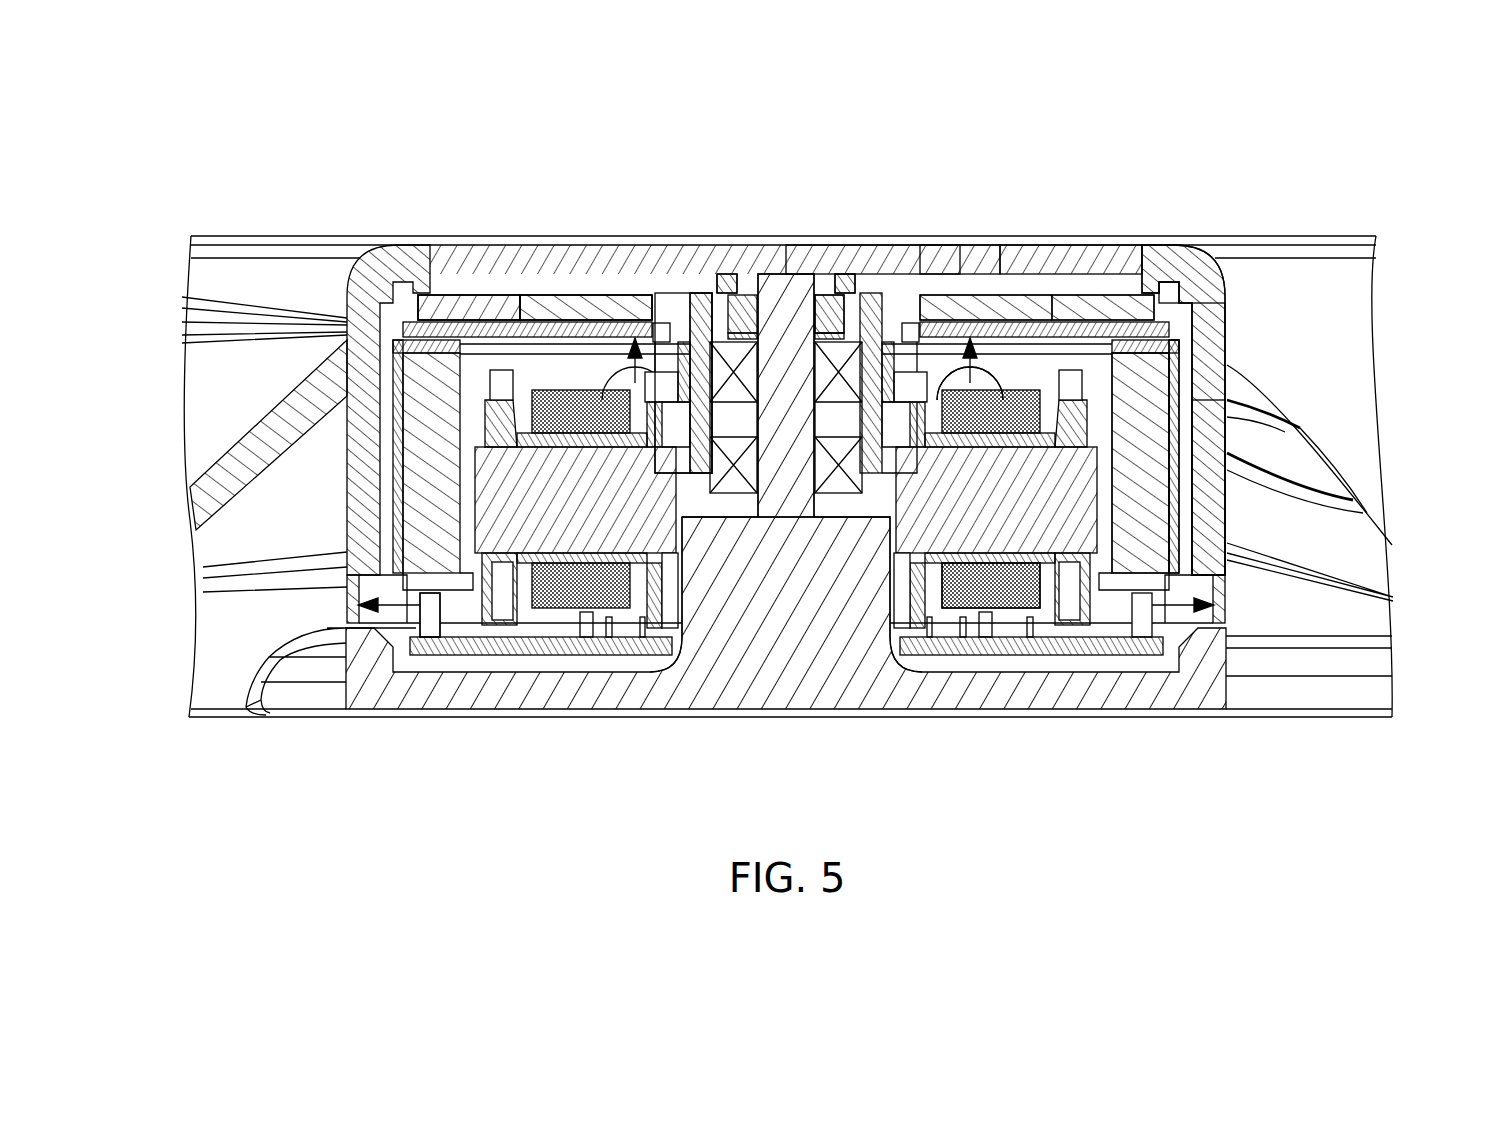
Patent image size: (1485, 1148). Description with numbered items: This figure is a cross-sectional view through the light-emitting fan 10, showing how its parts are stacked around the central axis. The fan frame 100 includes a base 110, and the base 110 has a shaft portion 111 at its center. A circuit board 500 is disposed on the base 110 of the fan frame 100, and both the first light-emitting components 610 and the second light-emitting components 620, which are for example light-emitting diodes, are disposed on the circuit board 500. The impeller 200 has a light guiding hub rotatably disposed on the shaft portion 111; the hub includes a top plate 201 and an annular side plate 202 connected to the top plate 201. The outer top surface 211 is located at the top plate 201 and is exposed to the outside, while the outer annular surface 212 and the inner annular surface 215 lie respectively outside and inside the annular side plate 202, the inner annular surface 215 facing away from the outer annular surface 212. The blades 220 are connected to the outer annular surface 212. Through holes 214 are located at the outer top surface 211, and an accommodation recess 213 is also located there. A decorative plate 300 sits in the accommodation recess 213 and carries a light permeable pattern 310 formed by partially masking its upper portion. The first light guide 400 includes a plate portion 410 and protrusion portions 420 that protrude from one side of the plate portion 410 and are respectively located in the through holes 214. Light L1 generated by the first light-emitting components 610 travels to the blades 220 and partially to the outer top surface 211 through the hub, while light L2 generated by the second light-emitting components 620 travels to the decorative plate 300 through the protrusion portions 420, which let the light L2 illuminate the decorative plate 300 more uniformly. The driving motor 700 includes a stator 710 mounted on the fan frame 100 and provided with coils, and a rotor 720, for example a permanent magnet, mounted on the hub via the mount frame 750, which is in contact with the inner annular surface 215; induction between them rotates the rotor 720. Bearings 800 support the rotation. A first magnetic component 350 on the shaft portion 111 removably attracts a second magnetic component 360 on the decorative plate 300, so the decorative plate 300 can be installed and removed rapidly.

The light-emitting fan 10 is at (781, 466).
The fan frame 100 is at (658, 736).
The base 110 is at (790, 674).
The shaft portion 111 is at (790, 453).
The impeller 200 is at (1218, 246).
The top plate 201 is at (1108, 303).
The annular side plate 202 is at (1207, 375).
The outer top surface 211 is at (1160, 232).
The outer annular surface 212 is at (1250, 435).
The accommodation recess 213 is at (1088, 272).
The through holes 214 is at (653, 270).
The inner annular surface 215 is at (1163, 328).
The blades 220 is at (235, 452).
The decorative plate 300 is at (826, 330).
The light permeable pattern 310 is at (932, 250).
The first magnetic component 350 is at (832, 292).
The second magnetic component 360 is at (730, 290).
The first light guide 400 is at (435, 178).
The plate portion 410 is at (455, 318).
The protrusion portions 420 is at (550, 300).
The circuit board 500 is at (497, 646).
The first light-emitting components 610 is at (430, 618).
The second light-emitting components 620 is at (980, 378).
The driving motor 700 is at (1020, 788).
The stator 710 is at (1041, 630).
The rotor 720 is at (1133, 555).
The mount frame 750 is at (1180, 548).
The bearings 800 is at (717, 460).
The light L1 is at (397, 612).
The light L2 is at (632, 368).